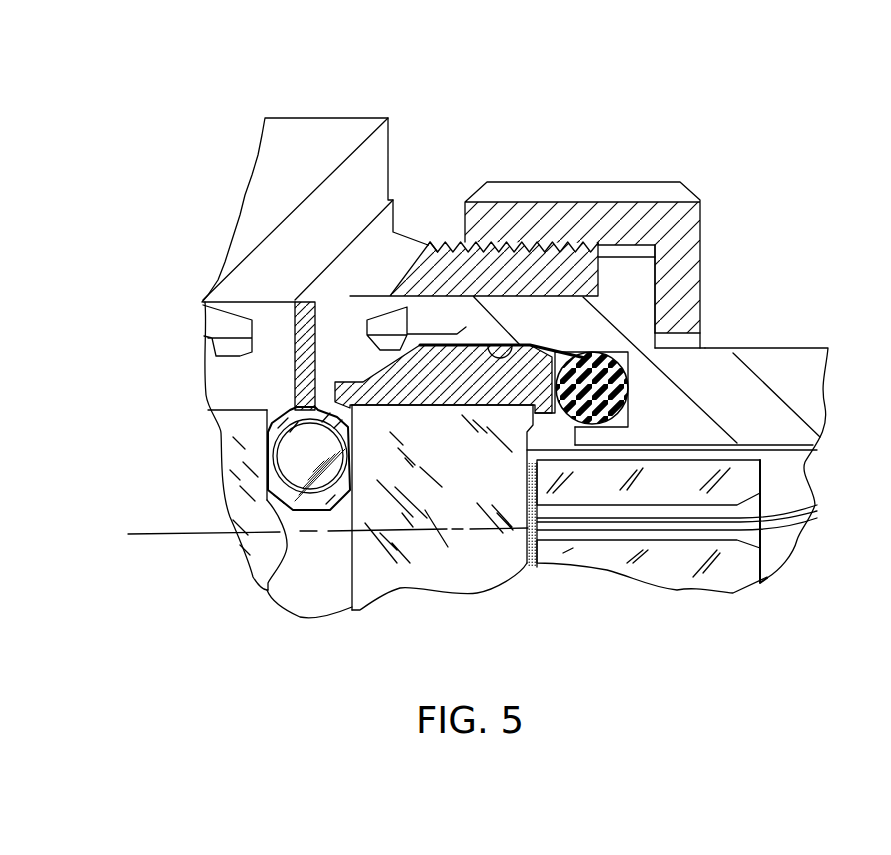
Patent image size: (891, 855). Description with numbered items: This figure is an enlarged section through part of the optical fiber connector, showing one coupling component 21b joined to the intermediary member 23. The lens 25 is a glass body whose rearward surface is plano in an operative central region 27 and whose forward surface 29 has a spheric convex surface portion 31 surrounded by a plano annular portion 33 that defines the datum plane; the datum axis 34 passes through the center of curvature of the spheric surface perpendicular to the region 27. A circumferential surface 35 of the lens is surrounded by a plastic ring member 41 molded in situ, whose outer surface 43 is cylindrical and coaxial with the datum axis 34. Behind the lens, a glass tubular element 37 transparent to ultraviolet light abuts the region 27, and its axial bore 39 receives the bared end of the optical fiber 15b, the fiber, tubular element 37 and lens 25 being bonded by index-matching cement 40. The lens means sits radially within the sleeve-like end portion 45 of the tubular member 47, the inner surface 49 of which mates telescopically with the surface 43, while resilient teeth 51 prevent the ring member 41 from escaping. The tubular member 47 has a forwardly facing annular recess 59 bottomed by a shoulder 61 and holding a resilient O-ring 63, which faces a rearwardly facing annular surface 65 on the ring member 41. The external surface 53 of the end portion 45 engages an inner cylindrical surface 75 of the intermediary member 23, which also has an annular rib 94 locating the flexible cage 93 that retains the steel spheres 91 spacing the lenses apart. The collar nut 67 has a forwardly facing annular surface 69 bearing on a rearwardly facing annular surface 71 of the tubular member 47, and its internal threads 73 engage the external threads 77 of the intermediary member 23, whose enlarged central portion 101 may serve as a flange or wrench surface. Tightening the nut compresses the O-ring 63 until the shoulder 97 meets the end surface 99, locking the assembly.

The intermediary member 23 is at (328, 90).
The enlarged central portion 101 is at (299, 130).
The coupling component 21b is at (787, 200).
The end surface 99 is at (597, 220).
The internal threads 73 is at (585, 240).
The collar nut 67 is at (612, 210).
The external threads 77 is at (428, 240).
The inner cylindrical surface 75 is at (262, 303).
The annular rib 94 is at (324, 338).
The teeth 51 is at (370, 317).
The sleeve-like end portion 45 is at (473, 296).
The annular shoulder 97 is at (598, 270).
The forwardly facing annular surface 69 is at (660, 290).
The rearwardly facing annular surface 71 is at (657, 313).
The tubular member 47 is at (725, 357).
The inner surface 49 is at (483, 345).
The external surface 53 is at (527, 344).
The rearwardly facing annular surface 65 is at (543, 350).
The outer surface 43 is at (450, 345).
The annular recess 59 is at (622, 360).
The O-ring 63 is at (598, 397).
The annular shoulder 61 is at (628, 415).
The ring member 41 is at (220, 393).
The circumferential surface 35 is at (222, 447).
The operative central region 27 is at (560, 450).
The lens 25 is at (235, 460).
The spheres 91 is at (293, 453).
The datum axis 34 is at (128, 534).
The convex surface portion 31 is at (283, 555).
The optical fiber 15b is at (785, 522).
The cement 40 is at (540, 558).
The axial bore 39 is at (673, 540).
The tubular element 37 is at (760, 580).
The forward surface 29 is at (338, 582).
The plano annular portion 33 is at (340, 606).
The cage 93 is at (293, 362).